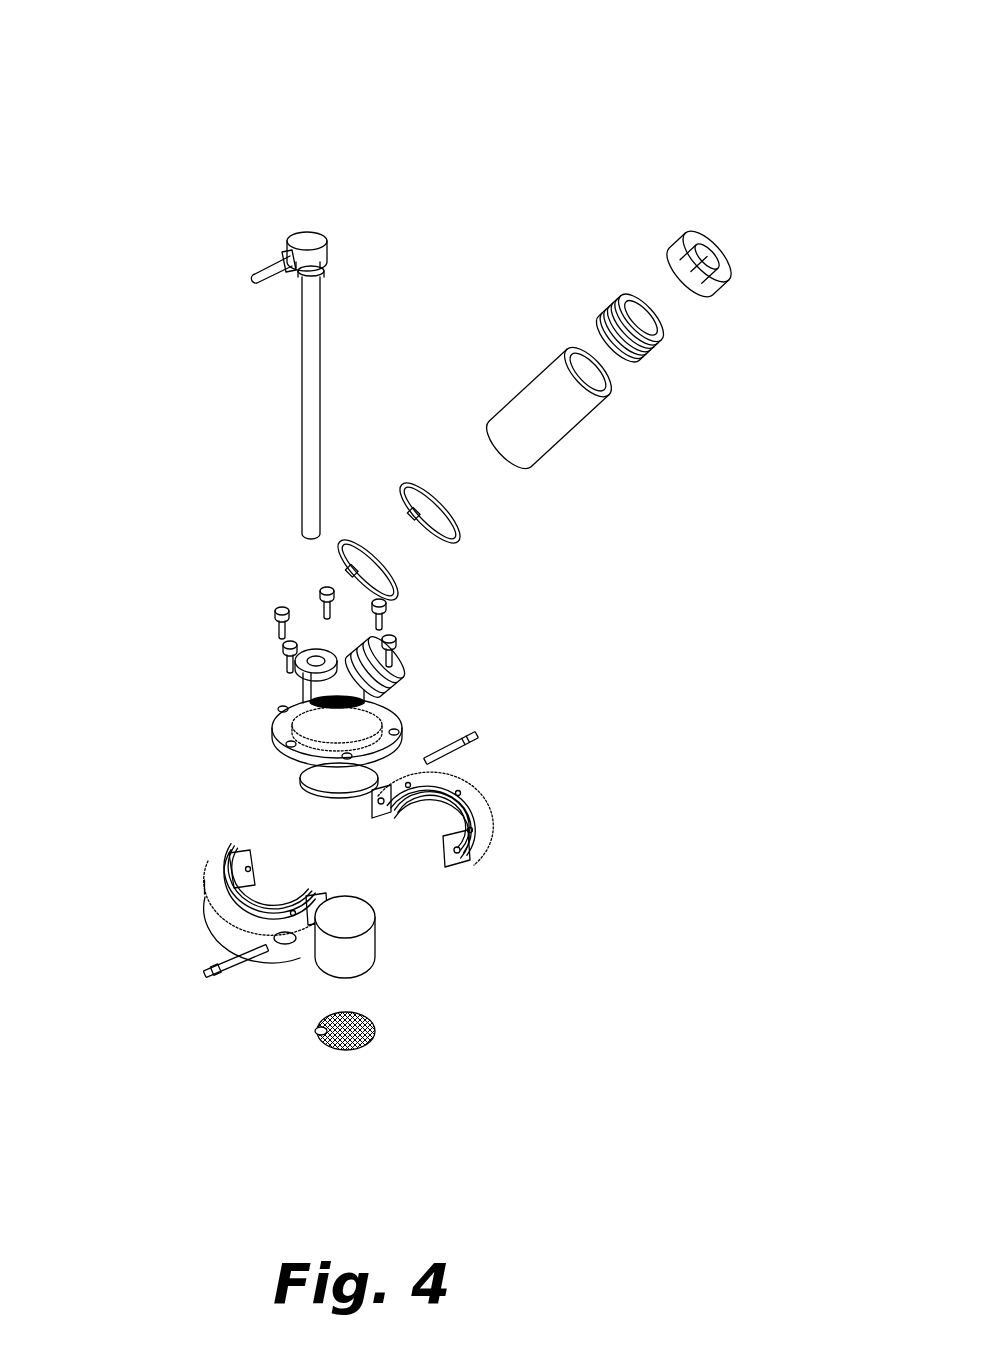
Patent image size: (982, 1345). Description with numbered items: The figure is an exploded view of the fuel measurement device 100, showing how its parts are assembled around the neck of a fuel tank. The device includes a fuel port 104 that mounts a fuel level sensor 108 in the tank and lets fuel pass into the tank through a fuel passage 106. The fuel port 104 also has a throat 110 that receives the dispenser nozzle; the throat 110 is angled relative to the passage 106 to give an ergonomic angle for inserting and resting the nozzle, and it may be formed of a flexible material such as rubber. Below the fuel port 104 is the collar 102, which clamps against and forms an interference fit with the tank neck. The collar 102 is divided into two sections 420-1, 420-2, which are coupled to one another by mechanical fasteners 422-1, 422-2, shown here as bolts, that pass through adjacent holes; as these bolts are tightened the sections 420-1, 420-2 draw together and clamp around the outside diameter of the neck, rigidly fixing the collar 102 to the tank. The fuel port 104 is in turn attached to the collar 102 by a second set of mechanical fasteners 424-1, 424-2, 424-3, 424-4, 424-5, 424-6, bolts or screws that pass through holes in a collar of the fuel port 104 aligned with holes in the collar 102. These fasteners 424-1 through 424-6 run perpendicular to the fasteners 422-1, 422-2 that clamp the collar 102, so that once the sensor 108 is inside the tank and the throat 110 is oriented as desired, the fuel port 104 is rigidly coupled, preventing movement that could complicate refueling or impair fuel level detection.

The fuel measurement device 100 is at (176, 78).
The collar 102 is at (253, 823).
The fuel port 104 is at (360, 690).
The fuel passage 106 is at (365, 952).
The fuel level sensor 108 is at (308, 430).
The throat 110 is at (545, 400).
The section 420-1 is at (510, 796).
The section 420-2 is at (224, 903).
The mechanical fastener 422-1 is at (487, 728).
The mechanical fastener 422-2 is at (215, 968).
The mechanical fastener 424-1 is at (323, 590).
The mechanical fastener 424-2 is at (278, 613).
The mechanical fastener 424-3 is at (286, 647).
The mechanical fastener 424-4 is at (300, 673).
The mechanical fastener 424-5 is at (394, 645).
The mechanical fastener 424-6 is at (392, 612).